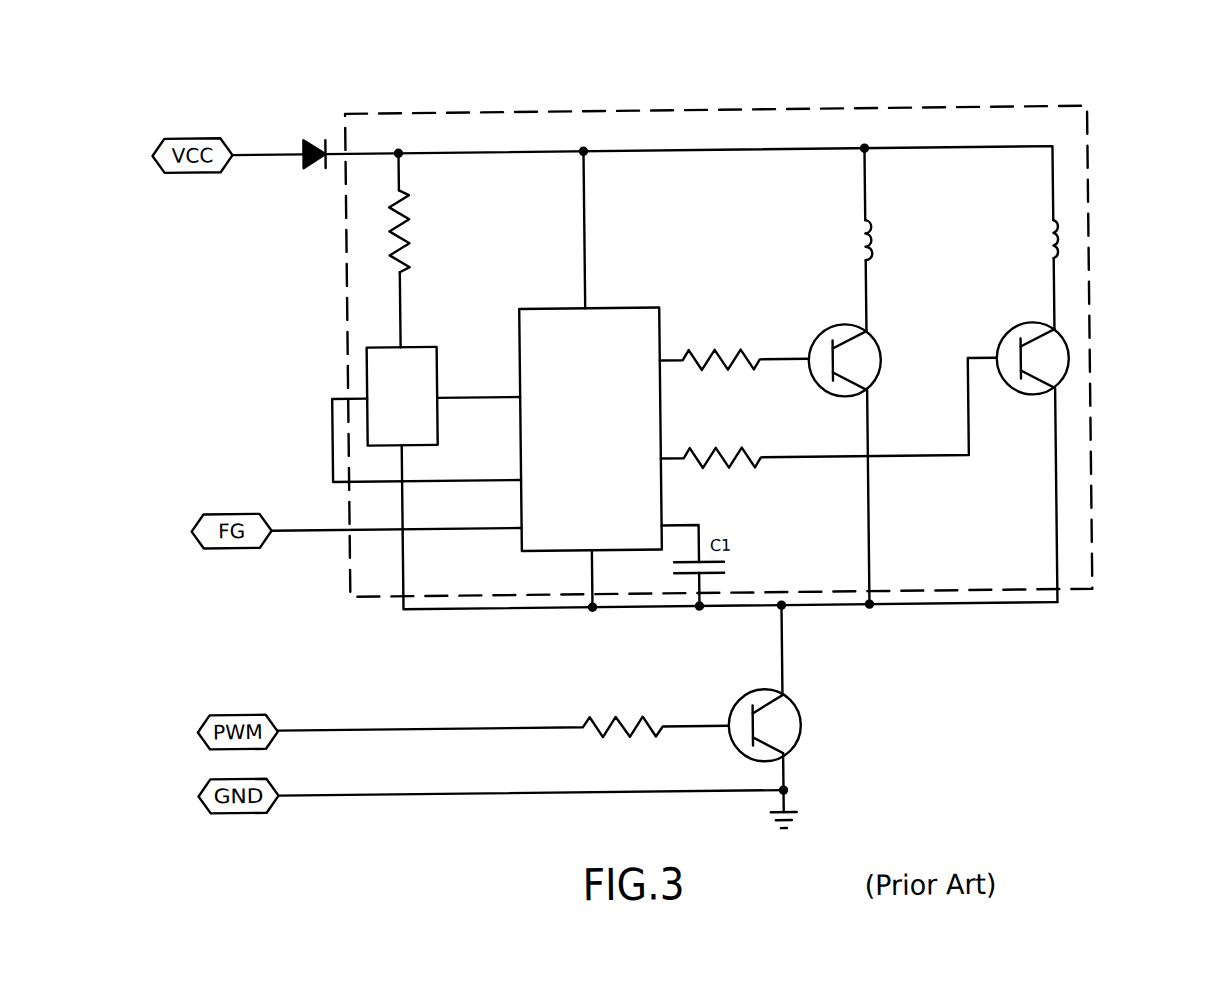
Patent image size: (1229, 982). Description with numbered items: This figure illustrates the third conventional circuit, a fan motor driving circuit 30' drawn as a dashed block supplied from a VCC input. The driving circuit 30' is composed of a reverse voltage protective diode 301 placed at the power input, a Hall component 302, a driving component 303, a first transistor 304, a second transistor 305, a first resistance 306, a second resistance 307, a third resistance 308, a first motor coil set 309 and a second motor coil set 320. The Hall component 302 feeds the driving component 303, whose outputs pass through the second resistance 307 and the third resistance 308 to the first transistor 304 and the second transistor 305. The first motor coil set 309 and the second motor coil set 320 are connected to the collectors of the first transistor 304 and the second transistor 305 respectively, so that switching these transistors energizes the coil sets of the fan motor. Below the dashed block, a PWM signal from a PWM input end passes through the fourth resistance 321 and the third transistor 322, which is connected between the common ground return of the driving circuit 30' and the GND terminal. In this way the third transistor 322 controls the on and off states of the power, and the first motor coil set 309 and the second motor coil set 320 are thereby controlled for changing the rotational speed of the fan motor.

The driving circuit 30' is at (745, 318).
The reverse voltage protective diode 301 is at (318, 138).
The Hall component 302 is at (370, 363).
The driving component 303 is at (544, 320).
The first transistor 304 is at (870, 373).
The second transistor 305 is at (1058, 377).
The first resistance 306 is at (397, 217).
The second resistance 307 is at (726, 358).
The third resistance 308 is at (740, 460).
The first motor coil set 309 is at (874, 238).
The second motor coil set 320 is at (1060, 243).
The fourth resistance 321 is at (629, 722).
The third transistor 322 is at (778, 718).